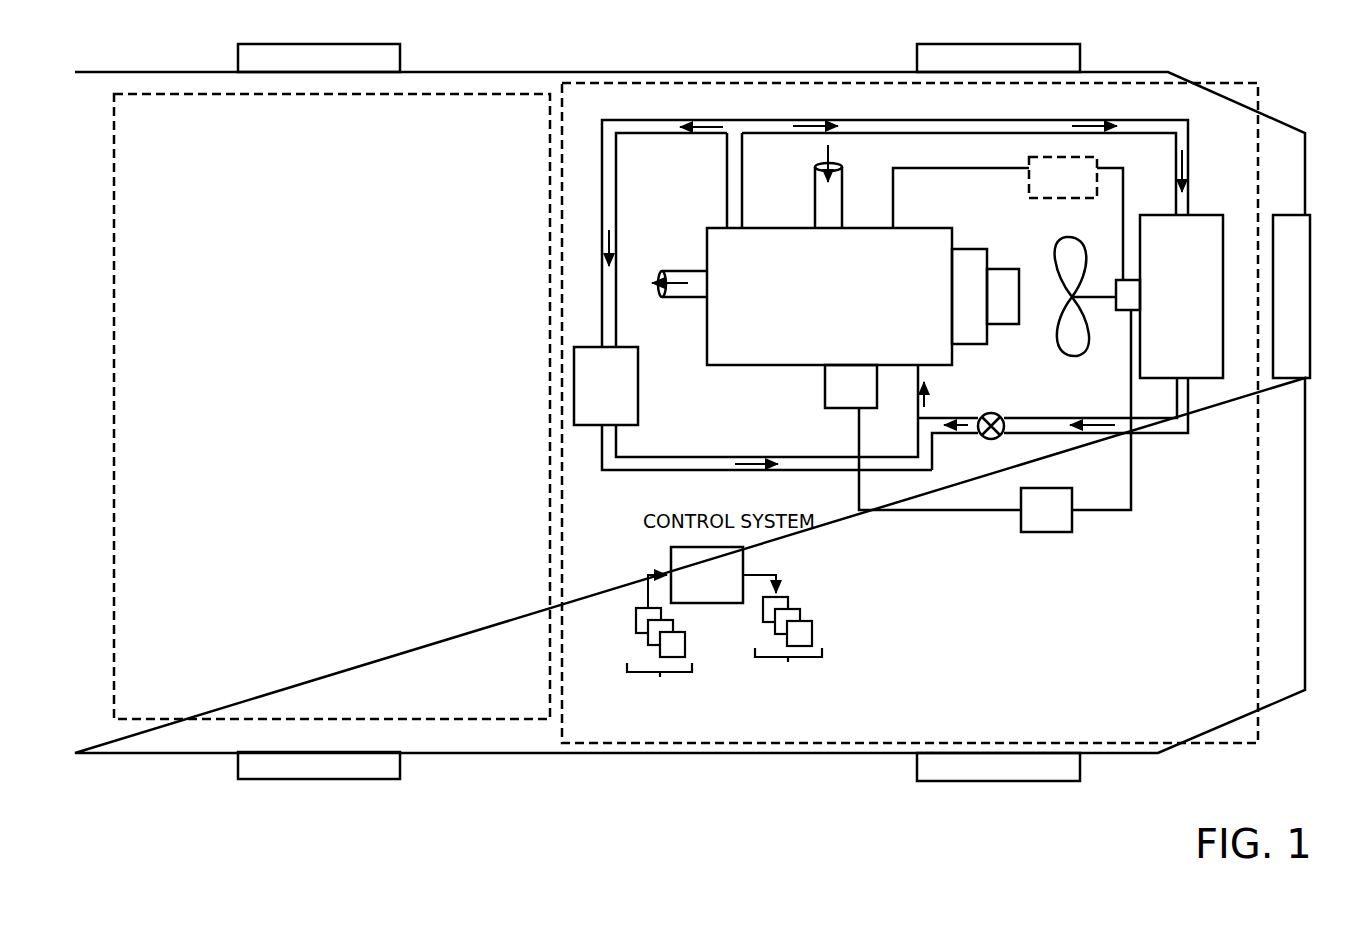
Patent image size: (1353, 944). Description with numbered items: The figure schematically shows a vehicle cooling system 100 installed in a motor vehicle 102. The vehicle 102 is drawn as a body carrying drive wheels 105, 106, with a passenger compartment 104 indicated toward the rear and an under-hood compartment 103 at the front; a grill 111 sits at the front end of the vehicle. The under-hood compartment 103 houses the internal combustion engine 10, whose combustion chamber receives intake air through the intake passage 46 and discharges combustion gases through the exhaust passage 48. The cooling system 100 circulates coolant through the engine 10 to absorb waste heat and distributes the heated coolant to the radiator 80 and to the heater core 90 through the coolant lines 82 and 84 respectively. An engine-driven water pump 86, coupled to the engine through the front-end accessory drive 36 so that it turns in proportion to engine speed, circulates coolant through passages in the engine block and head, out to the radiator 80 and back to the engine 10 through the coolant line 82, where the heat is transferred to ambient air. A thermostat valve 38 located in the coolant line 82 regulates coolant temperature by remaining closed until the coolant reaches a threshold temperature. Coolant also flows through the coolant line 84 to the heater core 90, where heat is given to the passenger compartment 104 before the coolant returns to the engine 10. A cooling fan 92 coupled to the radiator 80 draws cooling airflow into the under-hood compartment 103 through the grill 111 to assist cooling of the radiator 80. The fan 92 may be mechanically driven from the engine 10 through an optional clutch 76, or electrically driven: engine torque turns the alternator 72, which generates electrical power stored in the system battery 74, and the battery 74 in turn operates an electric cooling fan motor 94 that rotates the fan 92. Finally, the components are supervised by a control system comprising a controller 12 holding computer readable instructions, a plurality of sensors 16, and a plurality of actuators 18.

The internal combustion engine 10 is at (829, 296).
The controller 12 is at (707, 575).
The sensors 16 is at (660, 647).
The actuators 18 is at (798, 639).
The front-end accessory drive 36 is at (969, 296).
The thermostat valve 38 is at (995, 413).
The intake passage 46 is at (815, 203).
The exhaust passage 48 is at (698, 302).
The alternator 72 is at (923, 437).
The system battery 74 is at (1076, 421).
The clutch 76 is at (1008, 218).
The radiator 80 is at (1181, 296).
The coolant line 82 is at (883, 118).
The coolant line 84 is at (703, 134).
The engine-driven water pump 86 is at (1003, 296).
The heater core 90 is at (606, 386).
The cooling fan 92 is at (1060, 262).
The electric cooling fan motor 94 is at (1113, 312).
The vehicle cooling system 100 is at (1230, 132).
The motor vehicle 102 is at (590, 72).
The under-hood compartment 103 is at (1230, 84).
The passenger compartment 104 is at (332, 406).
The drive wheels 105 is at (318, 43).
The rear wheel 106 is at (318, 781).
The grill 111 is at (1310, 253).